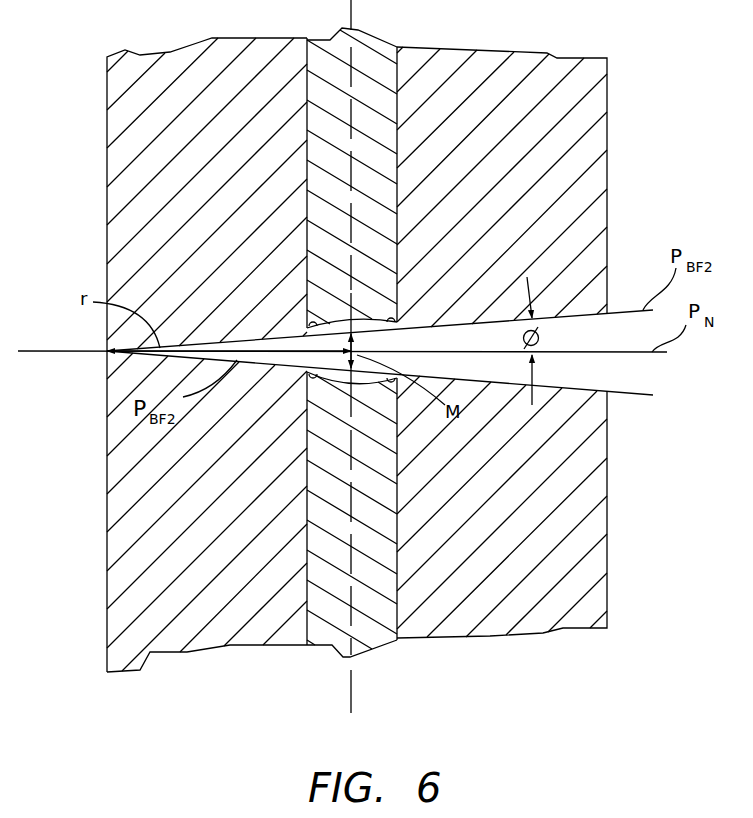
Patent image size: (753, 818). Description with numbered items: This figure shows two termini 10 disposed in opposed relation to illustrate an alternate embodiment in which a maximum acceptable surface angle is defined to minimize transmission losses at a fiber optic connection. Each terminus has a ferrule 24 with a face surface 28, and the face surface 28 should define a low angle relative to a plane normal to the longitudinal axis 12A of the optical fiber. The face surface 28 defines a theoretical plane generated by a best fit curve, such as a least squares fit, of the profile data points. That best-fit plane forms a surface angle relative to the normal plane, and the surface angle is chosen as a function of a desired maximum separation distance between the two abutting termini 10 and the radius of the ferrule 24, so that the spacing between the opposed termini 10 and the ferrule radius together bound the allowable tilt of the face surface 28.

The termini 10 is at (82, 208).
The ferrule 24 is at (582, 550).
The face surface 28 is at (630, 392).
The longitudinal axis 12A is at (352, 687).